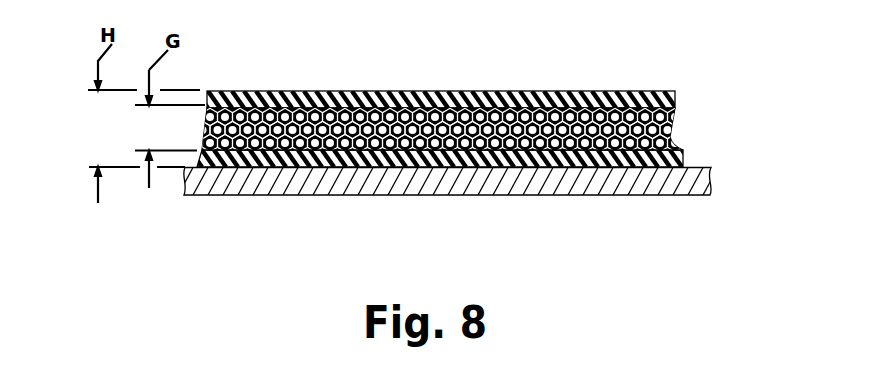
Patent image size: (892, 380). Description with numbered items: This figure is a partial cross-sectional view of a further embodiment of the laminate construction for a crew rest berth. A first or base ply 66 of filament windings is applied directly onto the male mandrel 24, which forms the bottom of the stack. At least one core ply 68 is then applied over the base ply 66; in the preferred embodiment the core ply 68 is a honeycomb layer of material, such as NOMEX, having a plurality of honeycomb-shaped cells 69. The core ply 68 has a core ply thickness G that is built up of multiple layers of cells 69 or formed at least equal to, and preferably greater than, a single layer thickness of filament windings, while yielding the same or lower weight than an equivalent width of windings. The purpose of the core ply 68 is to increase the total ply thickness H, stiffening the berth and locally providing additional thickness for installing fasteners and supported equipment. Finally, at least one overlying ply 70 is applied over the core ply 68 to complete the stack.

The male mandrel 24 is at (695, 190).
The base ply 66 is at (683, 153).
The core ply 68 is at (675, 109).
The honeycomb-shaped cells 69 is at (286, 112).
The overlying ply 70 is at (665, 91).